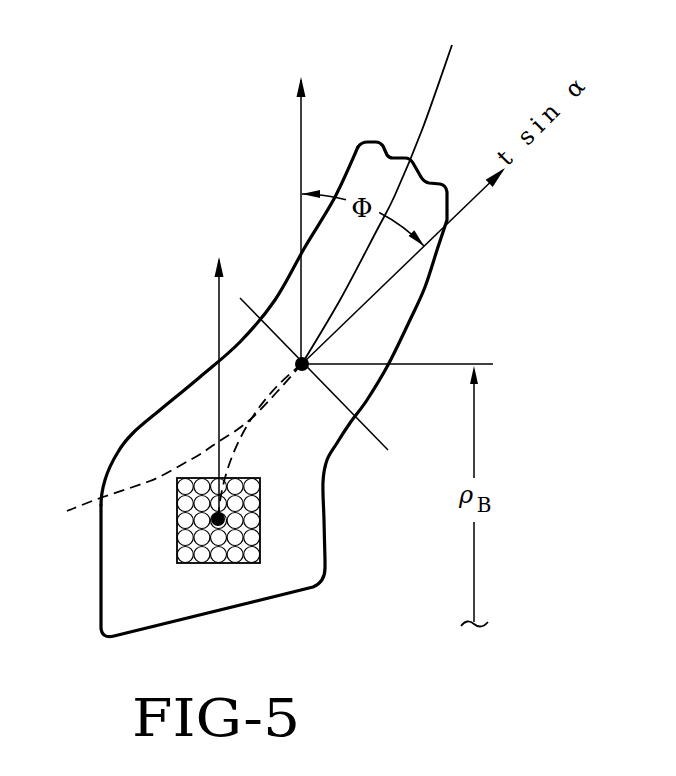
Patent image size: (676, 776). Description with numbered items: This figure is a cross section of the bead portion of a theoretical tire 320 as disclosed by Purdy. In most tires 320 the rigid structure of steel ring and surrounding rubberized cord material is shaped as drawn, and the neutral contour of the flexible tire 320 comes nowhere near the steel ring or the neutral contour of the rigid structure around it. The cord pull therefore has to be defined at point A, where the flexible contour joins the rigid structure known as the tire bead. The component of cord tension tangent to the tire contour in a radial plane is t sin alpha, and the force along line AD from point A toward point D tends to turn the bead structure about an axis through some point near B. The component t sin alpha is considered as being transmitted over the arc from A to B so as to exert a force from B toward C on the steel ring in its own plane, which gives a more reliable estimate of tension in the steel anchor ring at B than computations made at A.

The tire 320 is at (422, 288).
The point A is at (301, 380).
The point B is at (215, 521).
The point C is at (219, 374).
The point D is at (301, 207).